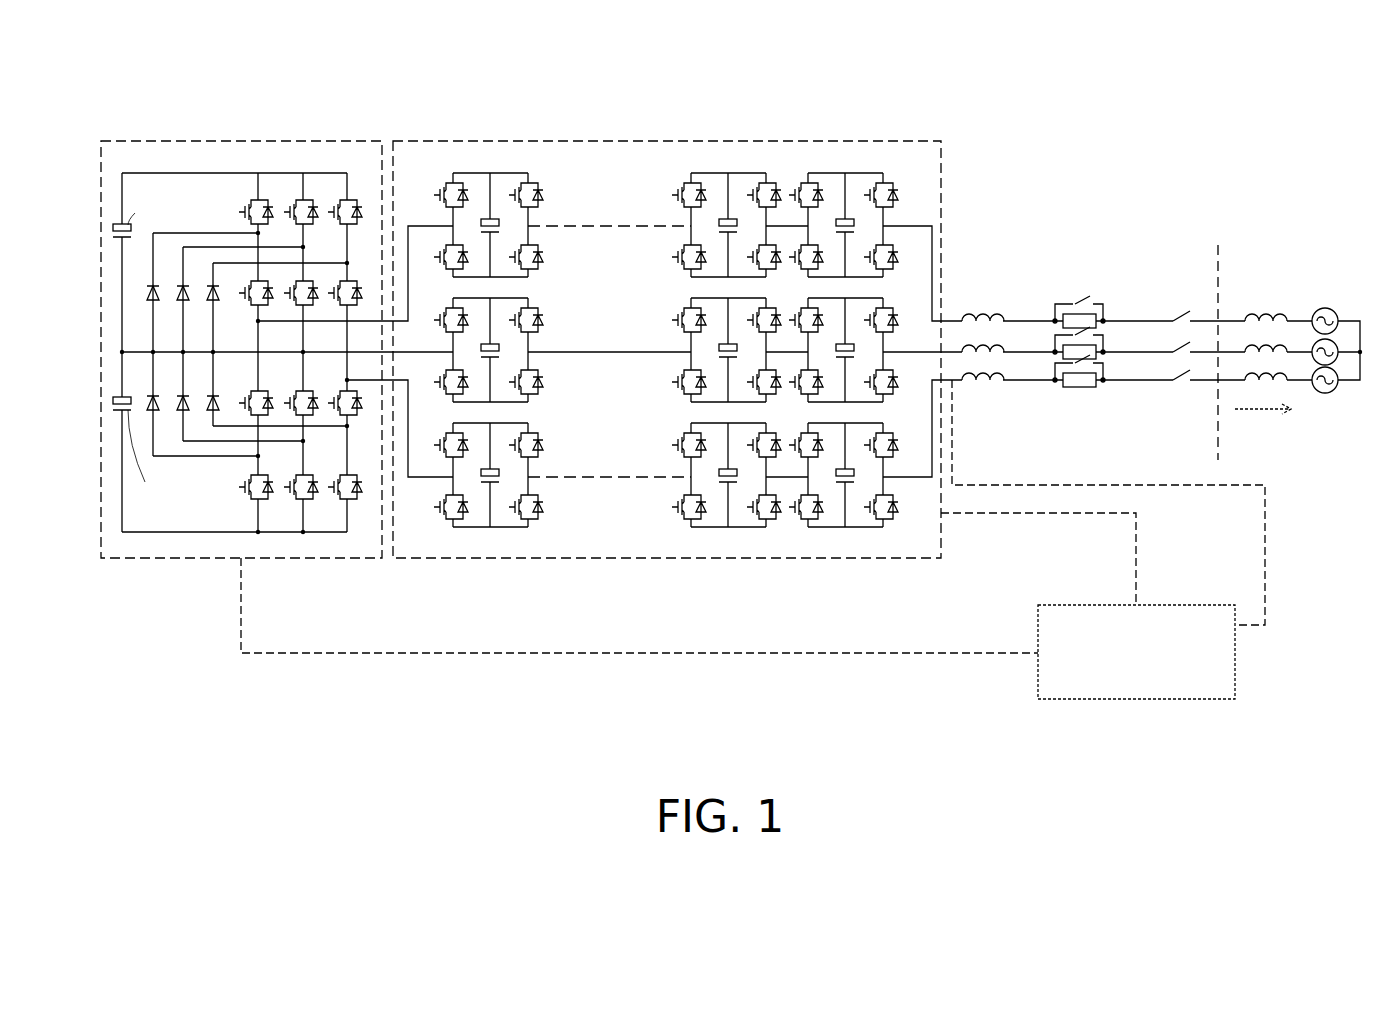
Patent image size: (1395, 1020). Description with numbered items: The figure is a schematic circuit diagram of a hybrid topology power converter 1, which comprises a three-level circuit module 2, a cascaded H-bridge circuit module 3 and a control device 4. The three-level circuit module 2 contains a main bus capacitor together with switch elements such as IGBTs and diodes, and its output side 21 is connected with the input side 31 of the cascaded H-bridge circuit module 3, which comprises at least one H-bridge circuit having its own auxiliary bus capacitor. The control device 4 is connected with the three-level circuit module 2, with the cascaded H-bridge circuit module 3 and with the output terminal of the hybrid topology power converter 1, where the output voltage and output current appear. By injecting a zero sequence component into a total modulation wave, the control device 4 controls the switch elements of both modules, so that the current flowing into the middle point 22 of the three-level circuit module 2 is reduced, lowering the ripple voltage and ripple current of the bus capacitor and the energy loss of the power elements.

The hybrid topology power converter 1 is at (1324, 76).
The three-level circuit module 2 is at (229, 141).
The cascaded H-bridge circuit module 3 is at (663, 141).
The control device 4 is at (1190, 605).
The output side 21 is at (371, 318).
The middle point 22 is at (126, 412).
The input side 31 is at (399, 385).